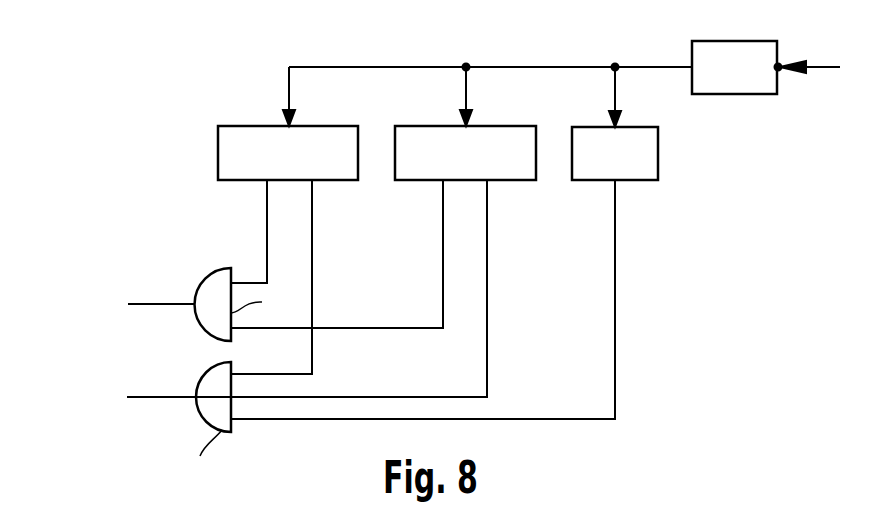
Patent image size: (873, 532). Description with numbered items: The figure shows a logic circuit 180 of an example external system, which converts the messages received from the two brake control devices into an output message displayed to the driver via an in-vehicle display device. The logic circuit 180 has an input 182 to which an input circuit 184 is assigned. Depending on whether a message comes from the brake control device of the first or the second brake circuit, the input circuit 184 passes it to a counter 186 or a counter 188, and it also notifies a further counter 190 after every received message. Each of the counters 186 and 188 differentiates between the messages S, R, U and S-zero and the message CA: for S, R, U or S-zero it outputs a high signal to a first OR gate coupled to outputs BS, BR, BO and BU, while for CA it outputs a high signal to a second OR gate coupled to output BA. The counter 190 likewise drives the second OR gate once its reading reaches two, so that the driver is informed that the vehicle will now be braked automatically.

The logic circuit 180 is at (116, 98).
The input 182 is at (780, 69).
The input circuit 184 is at (735, 94).
The counter 186 is at (238, 126).
The counter 188 is at (440, 126).
The counter 190 is at (590, 127).